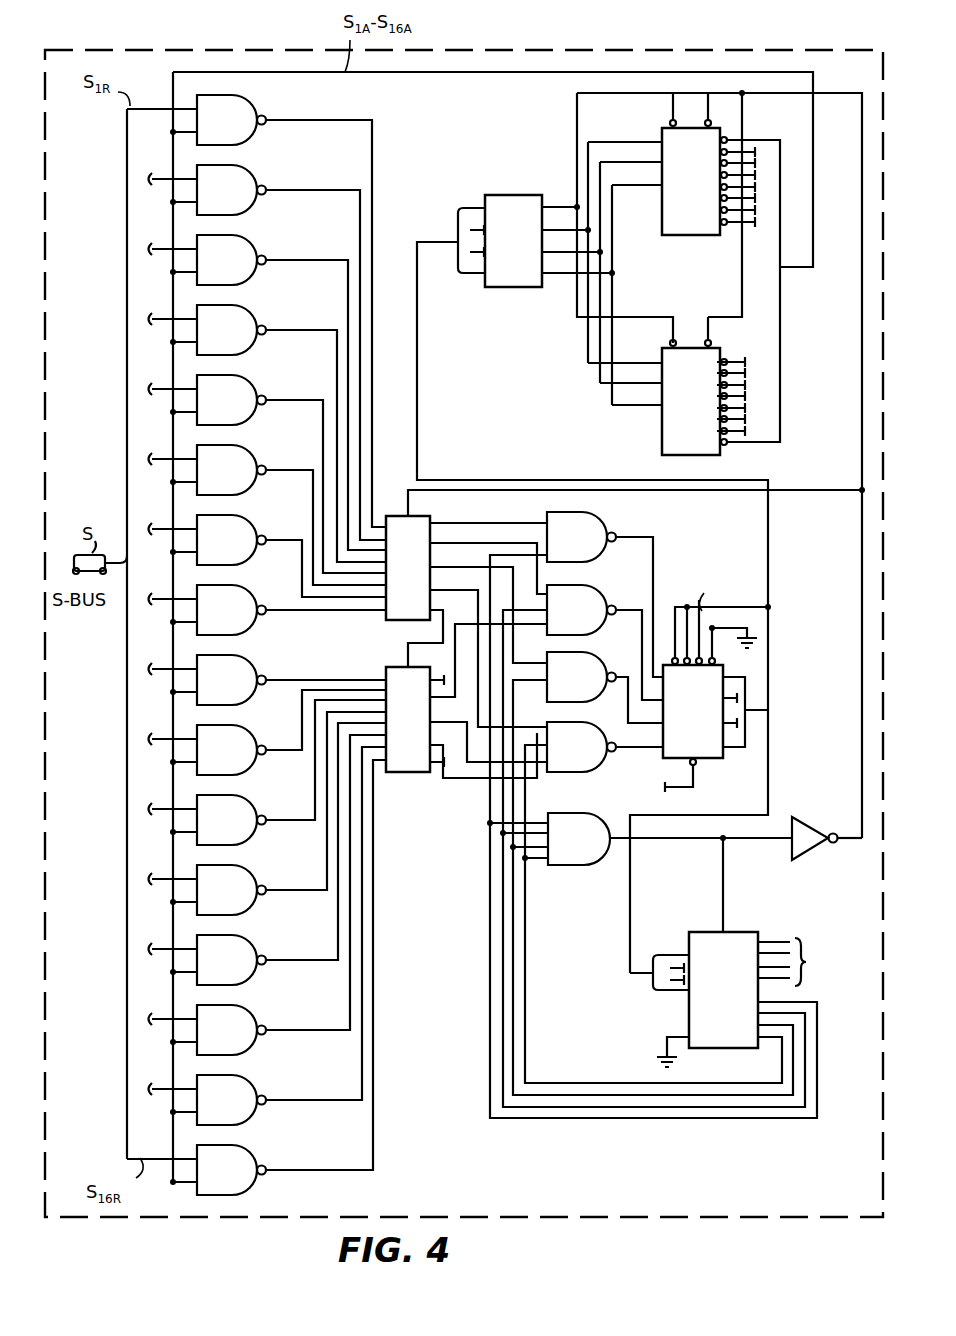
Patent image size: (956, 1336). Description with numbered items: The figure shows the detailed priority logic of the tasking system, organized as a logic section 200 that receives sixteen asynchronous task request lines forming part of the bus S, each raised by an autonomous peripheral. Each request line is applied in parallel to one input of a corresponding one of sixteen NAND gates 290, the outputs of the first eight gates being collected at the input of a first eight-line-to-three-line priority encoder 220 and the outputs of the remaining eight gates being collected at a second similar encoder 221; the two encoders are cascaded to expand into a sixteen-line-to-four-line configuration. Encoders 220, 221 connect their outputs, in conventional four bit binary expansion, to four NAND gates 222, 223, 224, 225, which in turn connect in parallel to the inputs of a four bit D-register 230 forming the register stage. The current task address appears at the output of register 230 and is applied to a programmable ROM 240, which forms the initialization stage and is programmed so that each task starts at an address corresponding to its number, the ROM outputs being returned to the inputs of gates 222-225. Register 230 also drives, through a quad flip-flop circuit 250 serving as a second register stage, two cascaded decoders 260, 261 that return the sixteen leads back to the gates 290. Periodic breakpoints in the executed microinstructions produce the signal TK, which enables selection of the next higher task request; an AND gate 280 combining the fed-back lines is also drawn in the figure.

The logic section 200 is at (636, 1222).
The first 8-line-to-3-line priority encoder 220 is at (432, 517).
The priority encoder 221 is at (412, 775).
The NAND gate 222 is at (608, 527).
The NAND gate 223 is at (600, 590).
The NAND gate 224 is at (590, 655).
The NAND gate 225 is at (578, 773).
The four bit D-register 230 is at (712, 765).
The programmable ROM 240 is at (688, 1005).
The quad flip-flop circuit 250 is at (510, 195).
The decoder 260 is at (670, 236).
The decoder 261 is at (660, 425).
The AND gate 280 is at (566, 868).
The NAND gates 290 is at (262, 100).